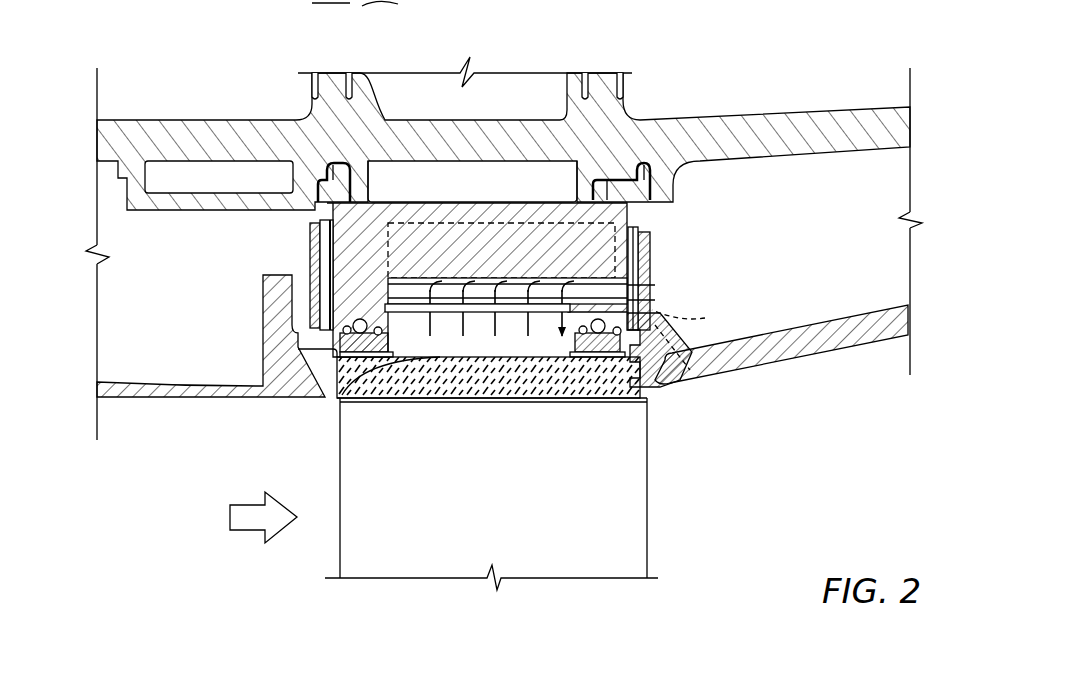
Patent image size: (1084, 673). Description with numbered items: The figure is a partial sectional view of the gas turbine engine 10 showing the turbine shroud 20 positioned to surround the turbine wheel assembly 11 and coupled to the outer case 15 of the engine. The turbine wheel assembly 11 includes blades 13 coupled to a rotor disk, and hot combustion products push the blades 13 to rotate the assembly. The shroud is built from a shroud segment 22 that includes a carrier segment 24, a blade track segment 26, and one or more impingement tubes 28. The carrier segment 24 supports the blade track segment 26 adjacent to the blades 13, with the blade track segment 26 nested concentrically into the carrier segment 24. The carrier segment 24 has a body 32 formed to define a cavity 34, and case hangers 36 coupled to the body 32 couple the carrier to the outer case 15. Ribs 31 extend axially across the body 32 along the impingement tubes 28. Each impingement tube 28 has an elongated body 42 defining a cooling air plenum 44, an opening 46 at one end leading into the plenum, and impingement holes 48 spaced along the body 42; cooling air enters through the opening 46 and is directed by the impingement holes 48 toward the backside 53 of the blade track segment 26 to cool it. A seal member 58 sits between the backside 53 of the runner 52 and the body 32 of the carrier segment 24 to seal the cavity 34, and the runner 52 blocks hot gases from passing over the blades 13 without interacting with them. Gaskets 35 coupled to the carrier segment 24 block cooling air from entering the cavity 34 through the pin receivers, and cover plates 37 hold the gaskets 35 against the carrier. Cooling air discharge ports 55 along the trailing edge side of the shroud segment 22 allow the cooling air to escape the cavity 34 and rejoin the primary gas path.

The gas turbine engine 10 is at (872, 76).
The turbine wheel assembly 11 is at (682, 539).
The blades 13 is at (620, 512).
The outer case 15 is at (694, 114).
The turbine shroud 20 is at (696, 250).
The shroud segment 22 is at (664, 304).
The carrier segment 24 is at (508, 194).
The blade track segment 26 is at (340, 369).
The impingement tubes 28 is at (477, 197).
The ribs 31 is at (430, 268).
The body 32 is at (360, 246).
The cavity 34 is at (422, 333).
The gaskets 35 is at (327, 247).
The case hangers 36 is at (329, 158).
The cover plates 37 is at (308, 272).
The elongated body 42 is at (516, 261).
The cooling air plenum 44 is at (639, 379).
The opening 46 is at (620, 271).
The impingement holes 48 is at (503, 260).
The runner 52 is at (334, 388).
The backside 53 is at (338, 399).
The cooling air discharge ports 55 is at (693, 320).
The seal member 58 is at (604, 336).